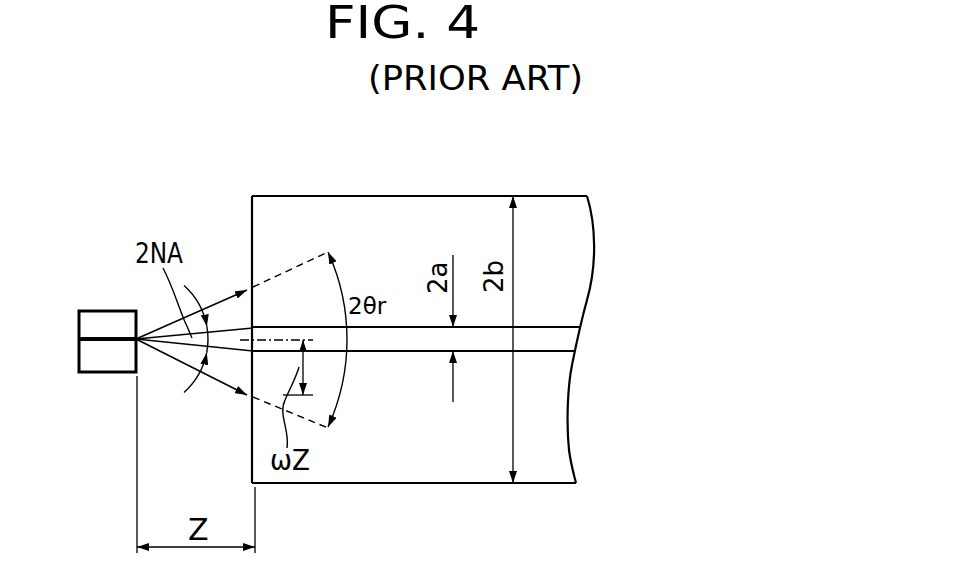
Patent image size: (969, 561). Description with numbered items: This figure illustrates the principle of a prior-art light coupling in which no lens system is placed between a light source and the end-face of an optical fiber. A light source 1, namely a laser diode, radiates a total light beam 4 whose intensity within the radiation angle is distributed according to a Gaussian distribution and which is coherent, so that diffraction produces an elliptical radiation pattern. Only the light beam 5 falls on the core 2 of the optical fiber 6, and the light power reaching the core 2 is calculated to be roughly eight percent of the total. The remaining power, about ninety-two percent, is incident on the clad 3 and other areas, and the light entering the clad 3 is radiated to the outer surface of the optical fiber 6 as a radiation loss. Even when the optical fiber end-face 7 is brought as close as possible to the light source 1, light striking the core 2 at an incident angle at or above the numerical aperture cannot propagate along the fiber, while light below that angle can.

The light source 1 is at (101, 318).
The core 2 is at (567, 338).
The clad 3 is at (582, 277).
The total light beam 4 is at (221, 382).
The light beam incident on the core 5 is at (230, 330).
The optical fiber 6 is at (537, 196).
The optical fiber end-face 7 is at (251, 212).